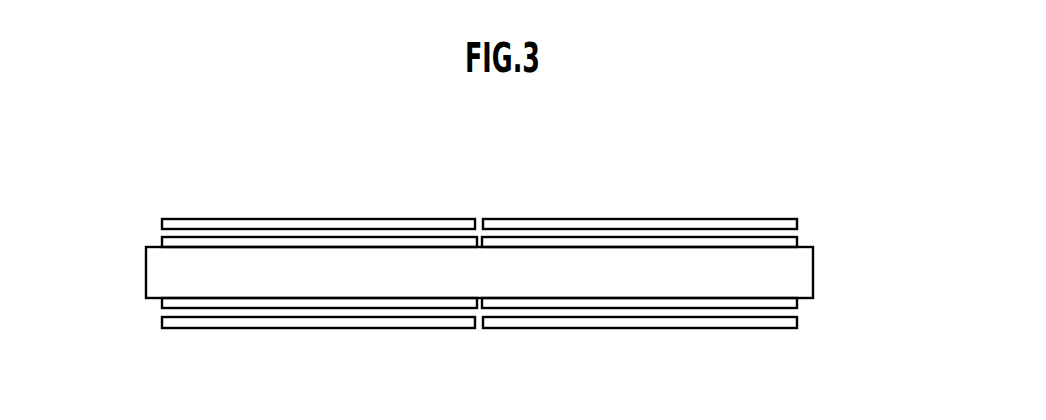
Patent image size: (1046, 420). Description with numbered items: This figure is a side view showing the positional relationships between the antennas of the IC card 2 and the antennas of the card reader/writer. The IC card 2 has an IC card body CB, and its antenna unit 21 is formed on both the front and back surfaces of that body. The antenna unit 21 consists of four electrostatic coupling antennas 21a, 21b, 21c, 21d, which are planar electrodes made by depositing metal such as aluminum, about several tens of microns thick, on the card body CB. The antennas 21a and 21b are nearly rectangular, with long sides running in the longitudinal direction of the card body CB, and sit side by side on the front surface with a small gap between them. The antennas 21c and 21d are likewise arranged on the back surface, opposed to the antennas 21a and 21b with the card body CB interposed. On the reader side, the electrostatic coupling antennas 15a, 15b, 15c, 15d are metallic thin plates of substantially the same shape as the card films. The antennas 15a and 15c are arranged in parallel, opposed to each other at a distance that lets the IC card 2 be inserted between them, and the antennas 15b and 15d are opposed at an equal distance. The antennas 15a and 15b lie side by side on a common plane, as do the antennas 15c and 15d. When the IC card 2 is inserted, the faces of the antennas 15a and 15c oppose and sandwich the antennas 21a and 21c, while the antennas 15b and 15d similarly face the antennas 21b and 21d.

The IC card 2 is at (493, 149).
The IC card body CB is at (146, 266).
The electrostatic coupling antenna 15a is at (250, 218).
The electrostatic coupling antenna 15b is at (698, 220).
The electrostatic coupling antenna 15c is at (260, 328).
The electrostatic coupling antenna 15d is at (698, 327).
The antenna unit 21 is at (511, 265).
The electrostatic coupling antenna 21a is at (162, 240).
The electrostatic coupling antenna 21b is at (797, 240).
The electrostatic coupling antenna 21c is at (162, 304).
The electrostatic coupling antenna 21d is at (797, 304).